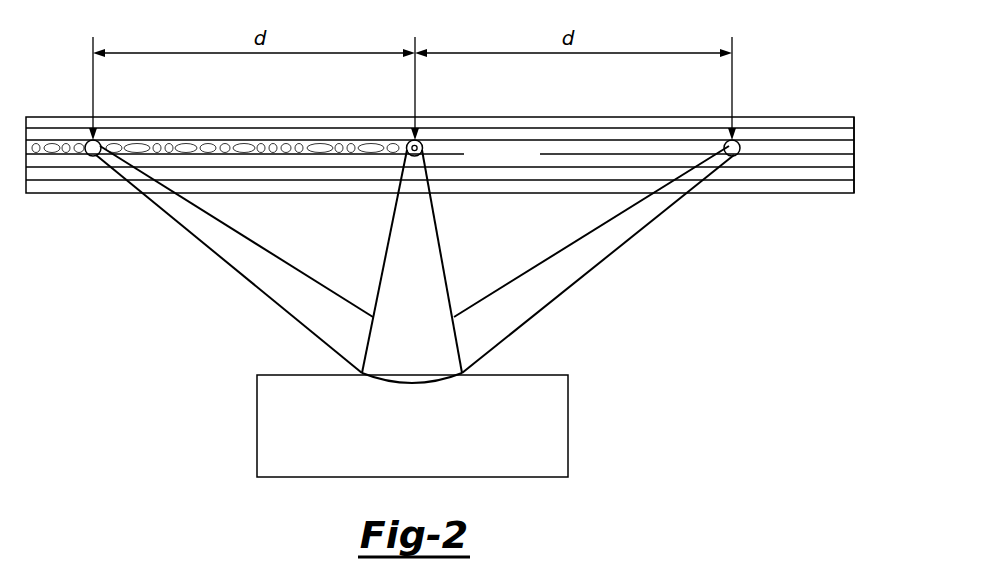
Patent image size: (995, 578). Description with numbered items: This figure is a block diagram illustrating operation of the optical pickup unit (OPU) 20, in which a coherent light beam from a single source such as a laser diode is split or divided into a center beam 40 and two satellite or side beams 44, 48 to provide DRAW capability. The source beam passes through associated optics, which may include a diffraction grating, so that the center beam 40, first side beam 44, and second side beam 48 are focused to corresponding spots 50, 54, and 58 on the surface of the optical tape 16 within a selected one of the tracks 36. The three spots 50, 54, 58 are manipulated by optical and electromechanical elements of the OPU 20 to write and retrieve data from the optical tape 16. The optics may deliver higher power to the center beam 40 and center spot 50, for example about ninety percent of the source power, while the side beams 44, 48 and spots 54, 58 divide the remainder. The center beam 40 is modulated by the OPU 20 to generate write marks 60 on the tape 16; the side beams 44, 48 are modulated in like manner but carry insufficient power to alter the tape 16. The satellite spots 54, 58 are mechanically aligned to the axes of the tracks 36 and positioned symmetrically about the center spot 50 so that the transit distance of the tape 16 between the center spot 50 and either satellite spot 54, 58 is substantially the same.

The optical tape 16 is at (810, 117).
The tracks 36 is at (869, 131).
The write marks 60 is at (360, 138).
The first side spot 54 is at (86, 157).
The center spot 50 is at (424, 148).
The second side spot 58 is at (738, 157).
The first side beam 44 is at (248, 304).
The center beam 40 is at (451, 238).
The second side beam 48 is at (575, 305).
The optical pickup unit 20 is at (568, 425).